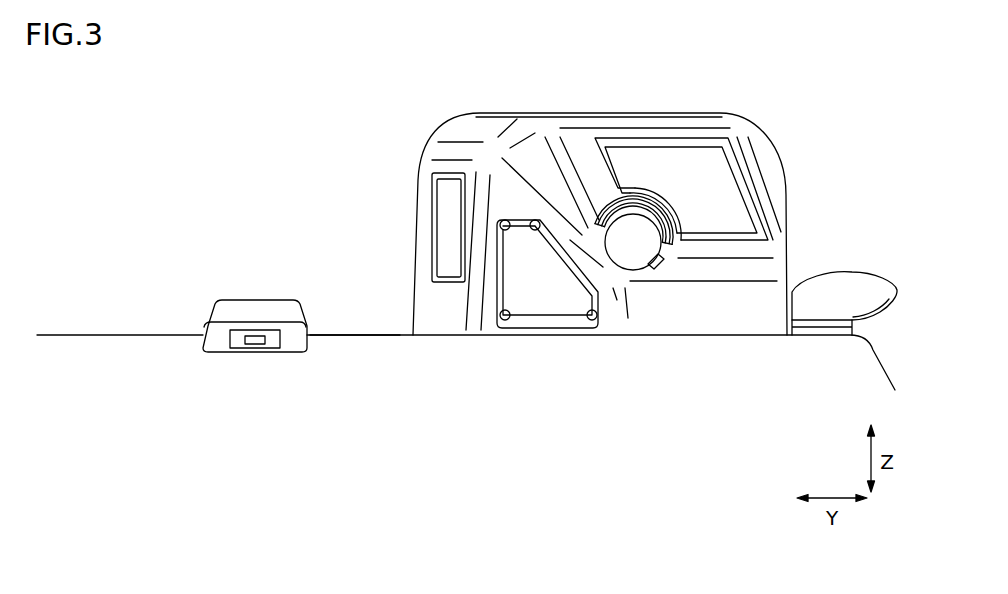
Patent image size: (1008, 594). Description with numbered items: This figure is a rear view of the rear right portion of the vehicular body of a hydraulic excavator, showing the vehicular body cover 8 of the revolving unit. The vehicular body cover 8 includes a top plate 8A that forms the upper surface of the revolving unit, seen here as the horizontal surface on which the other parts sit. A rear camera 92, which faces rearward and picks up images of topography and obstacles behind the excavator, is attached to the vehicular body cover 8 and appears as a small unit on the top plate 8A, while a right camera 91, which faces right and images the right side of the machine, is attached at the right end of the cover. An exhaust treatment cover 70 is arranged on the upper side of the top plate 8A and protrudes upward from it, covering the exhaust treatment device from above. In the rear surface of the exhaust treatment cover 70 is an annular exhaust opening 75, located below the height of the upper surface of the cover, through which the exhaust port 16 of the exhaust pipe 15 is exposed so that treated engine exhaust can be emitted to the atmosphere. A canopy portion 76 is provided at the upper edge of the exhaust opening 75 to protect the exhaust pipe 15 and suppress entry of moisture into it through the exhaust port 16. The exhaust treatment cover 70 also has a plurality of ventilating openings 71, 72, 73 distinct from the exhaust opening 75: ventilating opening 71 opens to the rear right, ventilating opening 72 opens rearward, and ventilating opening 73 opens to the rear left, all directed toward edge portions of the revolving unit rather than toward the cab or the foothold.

The vehicular body cover 8 is at (138, 375).
The top plate 8A is at (351, 336).
The exhaust pipe 15 is at (635, 271).
The exhaust port 16 is at (623, 243).
The exhaust treatment cover 70 is at (596, 123).
The ventilating opening 71 is at (697, 176).
The ventilating opening 72 is at (546, 288).
The ventilating opening 73 is at (445, 227).
The exhaust opening 75 is at (650, 268).
The canopy portion 76 is at (661, 203).
The right camera 91 is at (855, 284).
The rear camera 92 is at (257, 311).